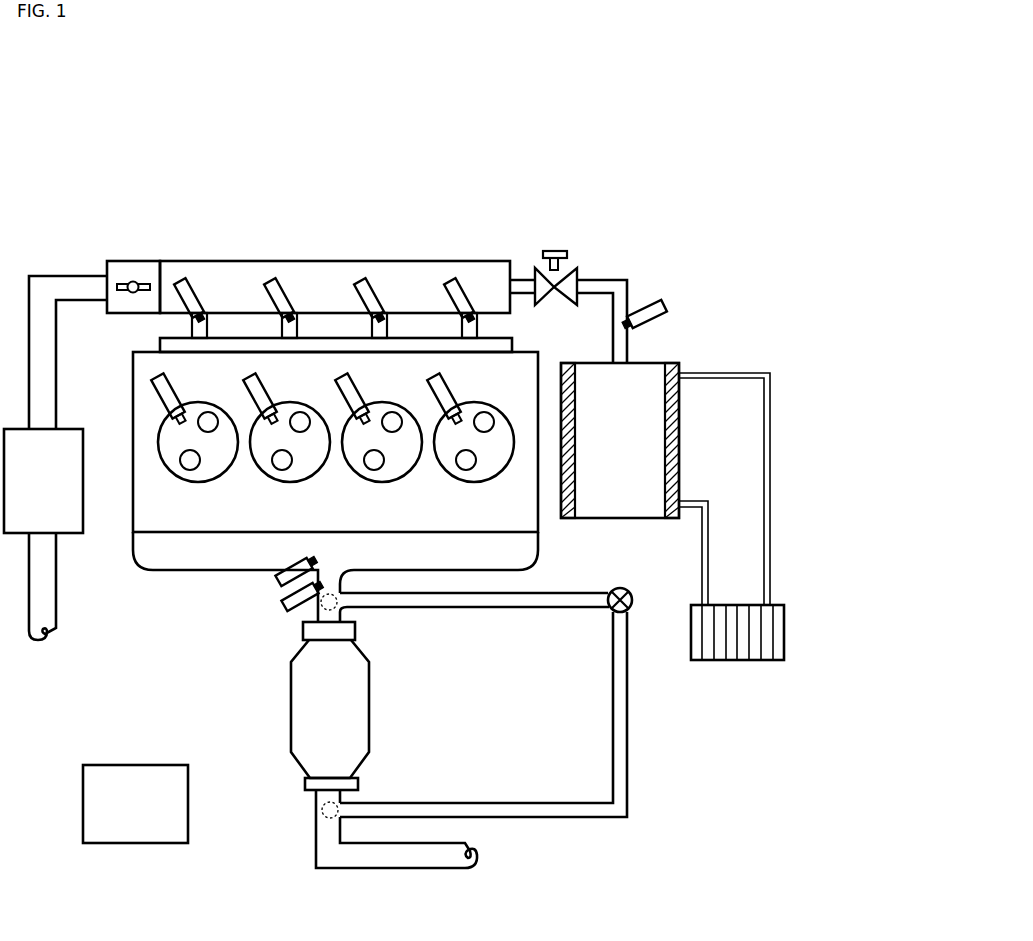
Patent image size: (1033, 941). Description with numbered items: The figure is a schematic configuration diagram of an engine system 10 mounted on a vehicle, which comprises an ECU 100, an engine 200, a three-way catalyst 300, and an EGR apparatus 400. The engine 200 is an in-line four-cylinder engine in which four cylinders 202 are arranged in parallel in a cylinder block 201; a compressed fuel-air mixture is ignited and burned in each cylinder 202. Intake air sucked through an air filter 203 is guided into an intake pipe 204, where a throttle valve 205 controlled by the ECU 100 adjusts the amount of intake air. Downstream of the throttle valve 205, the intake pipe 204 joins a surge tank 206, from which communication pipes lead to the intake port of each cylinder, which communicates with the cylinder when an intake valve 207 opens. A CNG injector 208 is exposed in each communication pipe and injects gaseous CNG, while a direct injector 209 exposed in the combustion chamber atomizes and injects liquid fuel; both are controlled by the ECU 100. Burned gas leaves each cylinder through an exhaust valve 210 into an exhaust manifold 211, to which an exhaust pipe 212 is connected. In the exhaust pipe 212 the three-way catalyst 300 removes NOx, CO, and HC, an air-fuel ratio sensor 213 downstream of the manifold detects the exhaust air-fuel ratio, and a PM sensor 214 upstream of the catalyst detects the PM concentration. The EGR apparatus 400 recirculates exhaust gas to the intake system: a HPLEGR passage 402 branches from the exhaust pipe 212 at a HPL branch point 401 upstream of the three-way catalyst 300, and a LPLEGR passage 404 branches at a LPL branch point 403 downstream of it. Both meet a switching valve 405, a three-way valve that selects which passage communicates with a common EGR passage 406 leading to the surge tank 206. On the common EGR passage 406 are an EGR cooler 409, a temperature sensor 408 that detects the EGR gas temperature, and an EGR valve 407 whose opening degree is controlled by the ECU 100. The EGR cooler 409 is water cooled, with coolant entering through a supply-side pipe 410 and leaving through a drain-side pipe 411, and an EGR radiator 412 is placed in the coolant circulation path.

The engine system 10 is at (706, 65).
The ECU 100 is at (83, 765).
The engine 200 is at (447, 178).
The cylinder block 201 is at (133, 380).
The cylinder 202 is at (232, 465).
The air filter 203 is at (83, 533).
The intake pipe 204 is at (55, 276).
The throttle valve 205 is at (133, 261).
The surge tank 206 is at (425, 261).
The intake valve 207 is at (208, 432).
The CNG injector 208 is at (186, 290).
The direct injector 209 is at (175, 396).
The exhaust valve 210 is at (180, 470).
The exhaust manifold 211 is at (205, 571).
The exhaust pipe 212 is at (327, 848).
The air-fuel ratio sensor 213 is at (277, 580).
The PM sensor 214 is at (284, 604).
The three-way catalyst 300 is at (291, 690).
The EGR apparatus 400 is at (672, 234).
The HPL branch point 401 is at (337, 604).
The HPLEGR passage 402 is at (434, 601).
The LPL branch point 403 is at (318, 810).
The LPLEGR passage 404 is at (560, 818).
The switching valve 405 is at (608, 606).
The common EGR passage 406 is at (627, 294).
The EGR valve 407 is at (577, 280).
The temperature sensor 408 is at (662, 312).
The EGR cooler 409 is at (648, 363).
The supply-side pipe 410 is at (690, 501).
The drain-side pipe 411 is at (712, 373).
The EGR radiator 412 is at (740, 660).